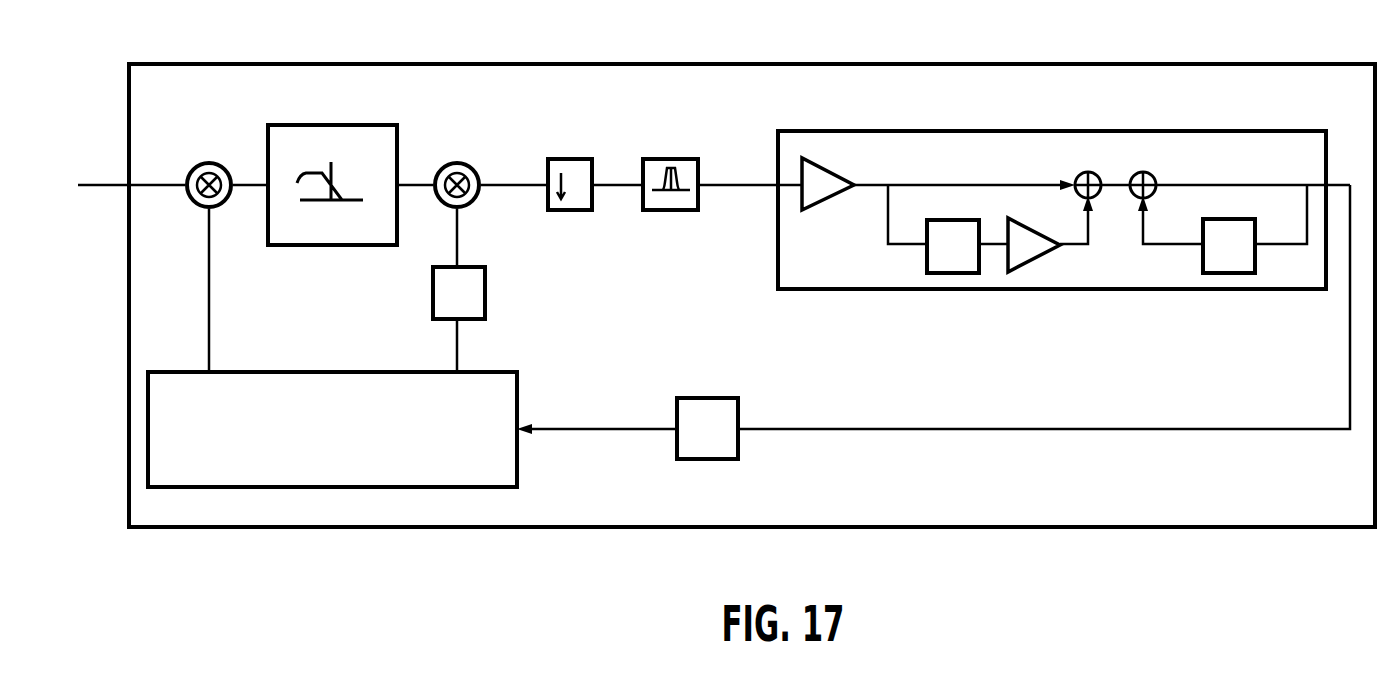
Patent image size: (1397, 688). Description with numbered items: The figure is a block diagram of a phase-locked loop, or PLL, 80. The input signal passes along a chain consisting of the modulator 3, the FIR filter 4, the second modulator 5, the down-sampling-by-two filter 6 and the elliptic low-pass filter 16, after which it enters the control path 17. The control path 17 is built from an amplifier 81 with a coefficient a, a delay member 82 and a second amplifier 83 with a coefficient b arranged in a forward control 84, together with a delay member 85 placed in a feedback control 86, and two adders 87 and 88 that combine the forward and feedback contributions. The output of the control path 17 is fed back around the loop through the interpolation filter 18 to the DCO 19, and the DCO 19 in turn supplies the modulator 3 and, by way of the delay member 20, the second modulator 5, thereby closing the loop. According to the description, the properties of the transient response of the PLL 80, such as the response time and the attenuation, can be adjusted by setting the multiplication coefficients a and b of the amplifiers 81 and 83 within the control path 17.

The modulator 3 is at (210, 160).
The FIR filter 4 is at (333, 135).
The second modulator 5 is at (459, 160).
The down-sampling-by-2 filter 6 is at (572, 160).
The elliptic low-pass filter 16 is at (686, 160).
The control path 17 is at (994, 118).
The interpolation filter 18 is at (708, 408).
The DCO 19 is at (345, 380).
The delay member 20 is at (485, 292).
The phase-locked loop 80 is at (1107, 543).
The amplifier 81 is at (816, 160).
The delay member 82 is at (942, 222).
The second amplifier 83 is at (1025, 228).
The forward control 84 is at (1068, 240).
The delay member 85 is at (1222, 222).
The feedback control 86 is at (1288, 242).
The adder 87 is at (1093, 170).
The adder 88 is at (1148, 170).